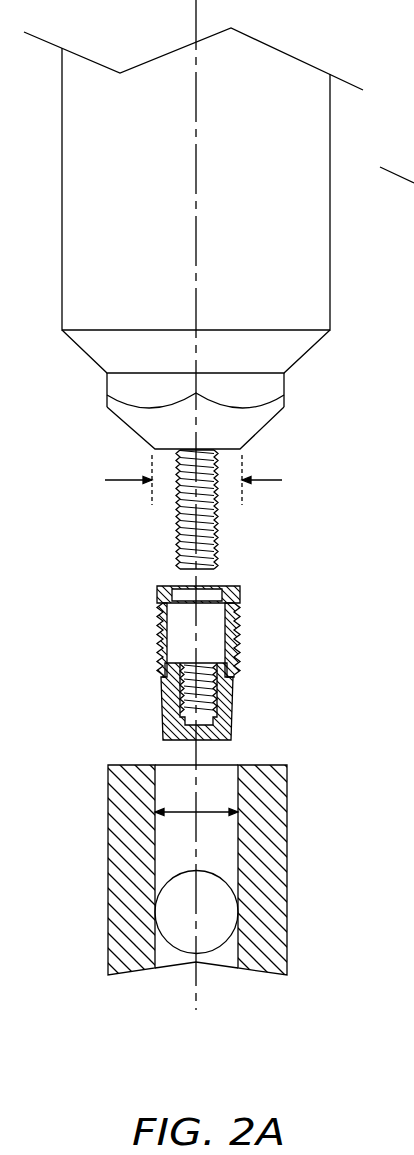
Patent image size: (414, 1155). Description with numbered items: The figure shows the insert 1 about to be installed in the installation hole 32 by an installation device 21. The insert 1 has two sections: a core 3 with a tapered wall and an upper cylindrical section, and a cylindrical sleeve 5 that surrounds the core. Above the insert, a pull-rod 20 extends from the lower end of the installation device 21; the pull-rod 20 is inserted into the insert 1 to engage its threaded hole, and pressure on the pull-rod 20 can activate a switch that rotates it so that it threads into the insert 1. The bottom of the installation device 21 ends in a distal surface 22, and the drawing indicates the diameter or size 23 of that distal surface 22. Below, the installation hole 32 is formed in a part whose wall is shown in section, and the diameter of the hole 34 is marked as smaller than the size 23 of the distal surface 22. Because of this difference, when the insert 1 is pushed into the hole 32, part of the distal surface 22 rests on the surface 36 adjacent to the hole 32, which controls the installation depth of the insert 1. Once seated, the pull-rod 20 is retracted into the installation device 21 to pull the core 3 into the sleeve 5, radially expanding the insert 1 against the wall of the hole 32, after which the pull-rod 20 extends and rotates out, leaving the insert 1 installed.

The insert 1 is at (128, 615).
The core 3 is at (153, 708).
The cylindrical sleeve 5 is at (147, 652).
The pull-rod 20 is at (202, 540).
The installation device 21 is at (322, 58).
The distal surface 22 is at (160, 462).
The diameter or size of the distal surface 23 is at (137, 484).
The installation hole 32 is at (173, 843).
The hole 34 is at (183, 810).
The surface adjacent to hole 36 is at (125, 772).